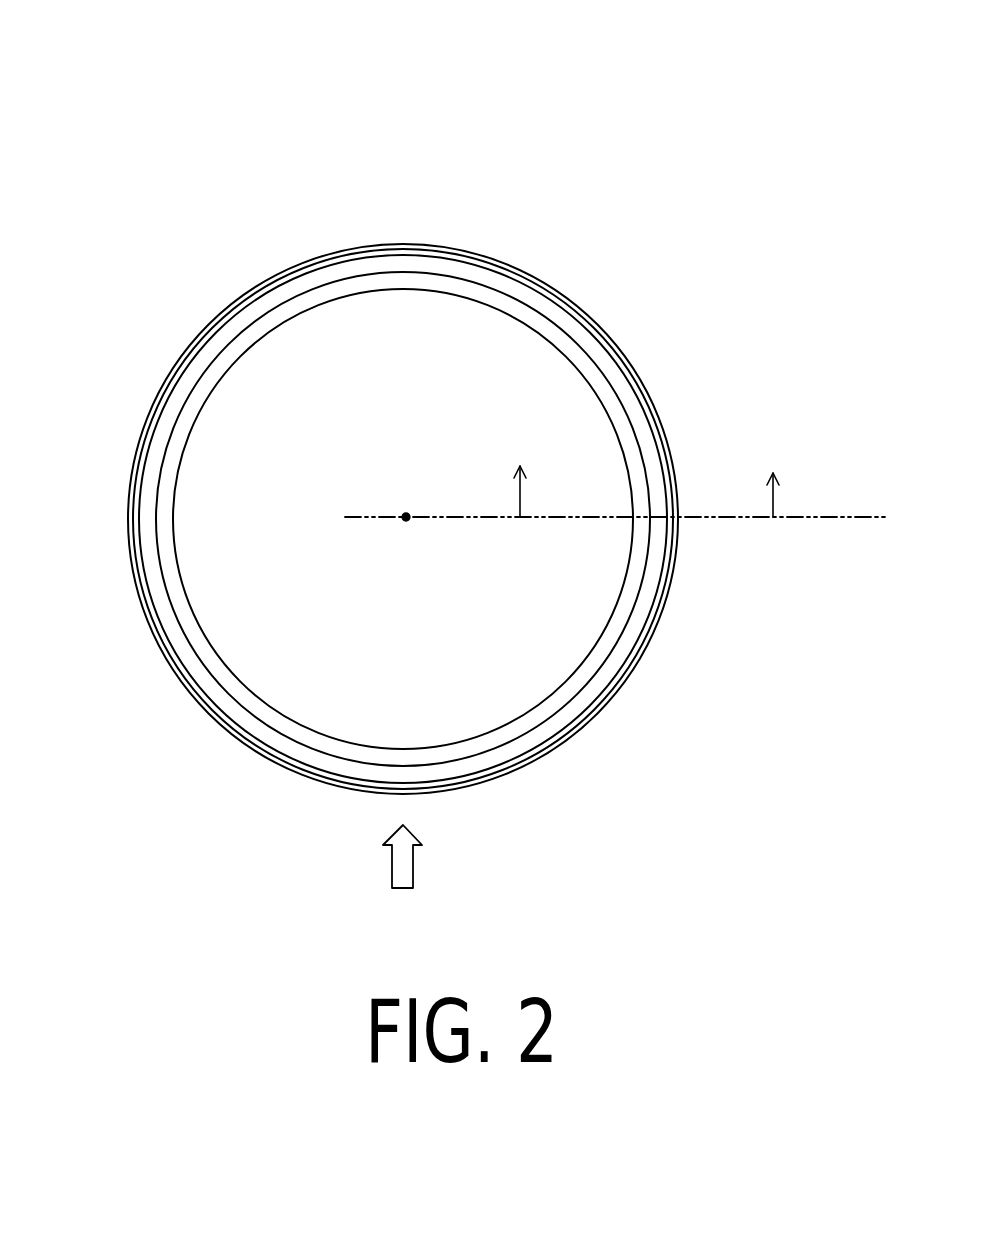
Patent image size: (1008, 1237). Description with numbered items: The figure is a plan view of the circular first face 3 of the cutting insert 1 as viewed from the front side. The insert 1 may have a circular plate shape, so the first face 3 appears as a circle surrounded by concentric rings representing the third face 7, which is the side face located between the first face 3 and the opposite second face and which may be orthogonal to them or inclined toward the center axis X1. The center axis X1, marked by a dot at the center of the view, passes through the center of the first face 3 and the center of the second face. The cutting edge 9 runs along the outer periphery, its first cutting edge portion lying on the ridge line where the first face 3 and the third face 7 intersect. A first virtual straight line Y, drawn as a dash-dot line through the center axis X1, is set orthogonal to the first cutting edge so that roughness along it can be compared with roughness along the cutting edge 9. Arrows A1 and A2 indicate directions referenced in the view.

The insert 1 is at (210, 115).
The first face 3 is at (320, 402).
The third face 7 is at (612, 702).
The cutting edge 9 is at (187, 692).
The center axis X1 is at (408, 515).
The first virtual straight line Y is at (617, 537).
The direction A1 is at (402, 881).
The direction A2 is at (645, 491).